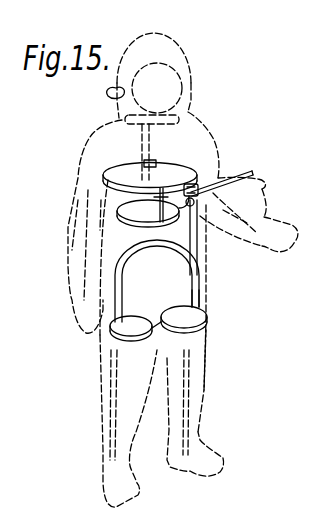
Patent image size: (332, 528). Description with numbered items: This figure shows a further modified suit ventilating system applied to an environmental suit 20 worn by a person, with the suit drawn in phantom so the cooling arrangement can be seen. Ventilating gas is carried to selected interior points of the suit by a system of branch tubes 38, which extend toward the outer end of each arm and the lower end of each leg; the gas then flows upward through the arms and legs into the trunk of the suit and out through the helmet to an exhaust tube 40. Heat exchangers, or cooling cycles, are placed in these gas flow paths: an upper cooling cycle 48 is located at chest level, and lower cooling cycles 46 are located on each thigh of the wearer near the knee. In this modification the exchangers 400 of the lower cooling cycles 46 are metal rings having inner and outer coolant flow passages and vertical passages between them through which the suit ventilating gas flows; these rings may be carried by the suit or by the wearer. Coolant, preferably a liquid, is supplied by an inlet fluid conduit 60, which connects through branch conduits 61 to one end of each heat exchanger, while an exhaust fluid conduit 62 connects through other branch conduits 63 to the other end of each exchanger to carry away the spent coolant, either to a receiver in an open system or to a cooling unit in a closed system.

The environmental suit 20 is at (207, 127).
The exhaust tube 40 is at (108, 96).
The branch tubes 38 is at (82, 273).
The cooling cycle 48 is at (108, 208).
The fluid conduit 60 is at (249, 174).
The fluid conduit 62 is at (212, 188).
The branch conduits 61 is at (122, 272).
The branch conduits 63 is at (190, 303).
The heat exchangers 400 is at (108, 337).
The cooling cycle 46 is at (208, 336).